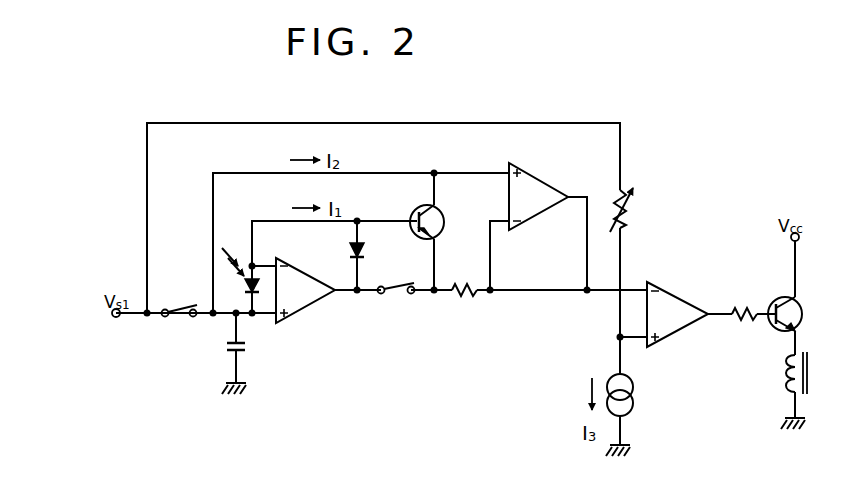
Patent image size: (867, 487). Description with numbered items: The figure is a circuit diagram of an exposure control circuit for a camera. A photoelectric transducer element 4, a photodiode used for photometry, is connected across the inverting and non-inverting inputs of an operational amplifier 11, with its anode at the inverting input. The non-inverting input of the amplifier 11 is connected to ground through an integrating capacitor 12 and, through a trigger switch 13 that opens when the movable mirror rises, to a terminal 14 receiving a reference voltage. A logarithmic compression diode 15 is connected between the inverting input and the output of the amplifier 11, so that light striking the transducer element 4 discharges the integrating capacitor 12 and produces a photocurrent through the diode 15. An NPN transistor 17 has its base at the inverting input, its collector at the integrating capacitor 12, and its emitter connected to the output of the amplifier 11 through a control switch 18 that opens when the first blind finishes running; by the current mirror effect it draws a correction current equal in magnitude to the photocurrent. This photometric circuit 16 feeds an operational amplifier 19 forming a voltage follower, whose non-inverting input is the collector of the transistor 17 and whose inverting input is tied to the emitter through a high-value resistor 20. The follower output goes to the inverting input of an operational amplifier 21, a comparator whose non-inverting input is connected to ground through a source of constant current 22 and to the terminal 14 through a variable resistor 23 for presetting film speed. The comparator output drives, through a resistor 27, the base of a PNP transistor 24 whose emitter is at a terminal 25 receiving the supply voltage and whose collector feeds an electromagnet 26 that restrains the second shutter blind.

The photoelectric transducer element 4 is at (245, 291).
The operational amplifier 11 is at (297, 268).
The integrating capacitor 12 is at (245, 349).
The trigger switch 13 is at (185, 318).
The terminal 14 is at (116, 317).
The logarithmic compression diode 15 is at (364, 250).
The photometric circuit 16 is at (390, 173).
The NPN transistor 17 is at (443, 212).
The control switch 18 is at (398, 296).
The operational amplifier 19 is at (535, 178).
The resistor 20 is at (465, 297).
The operational amplifier 21 is at (672, 304).
The source of constant current 22 is at (633, 386).
The variable resistor 23 is at (635, 212).
The PNP transistor 24 is at (800, 316).
The terminal 25 is at (797, 241).
The electromagnet 26 is at (808, 372).
The resistor 27 is at (744, 321).